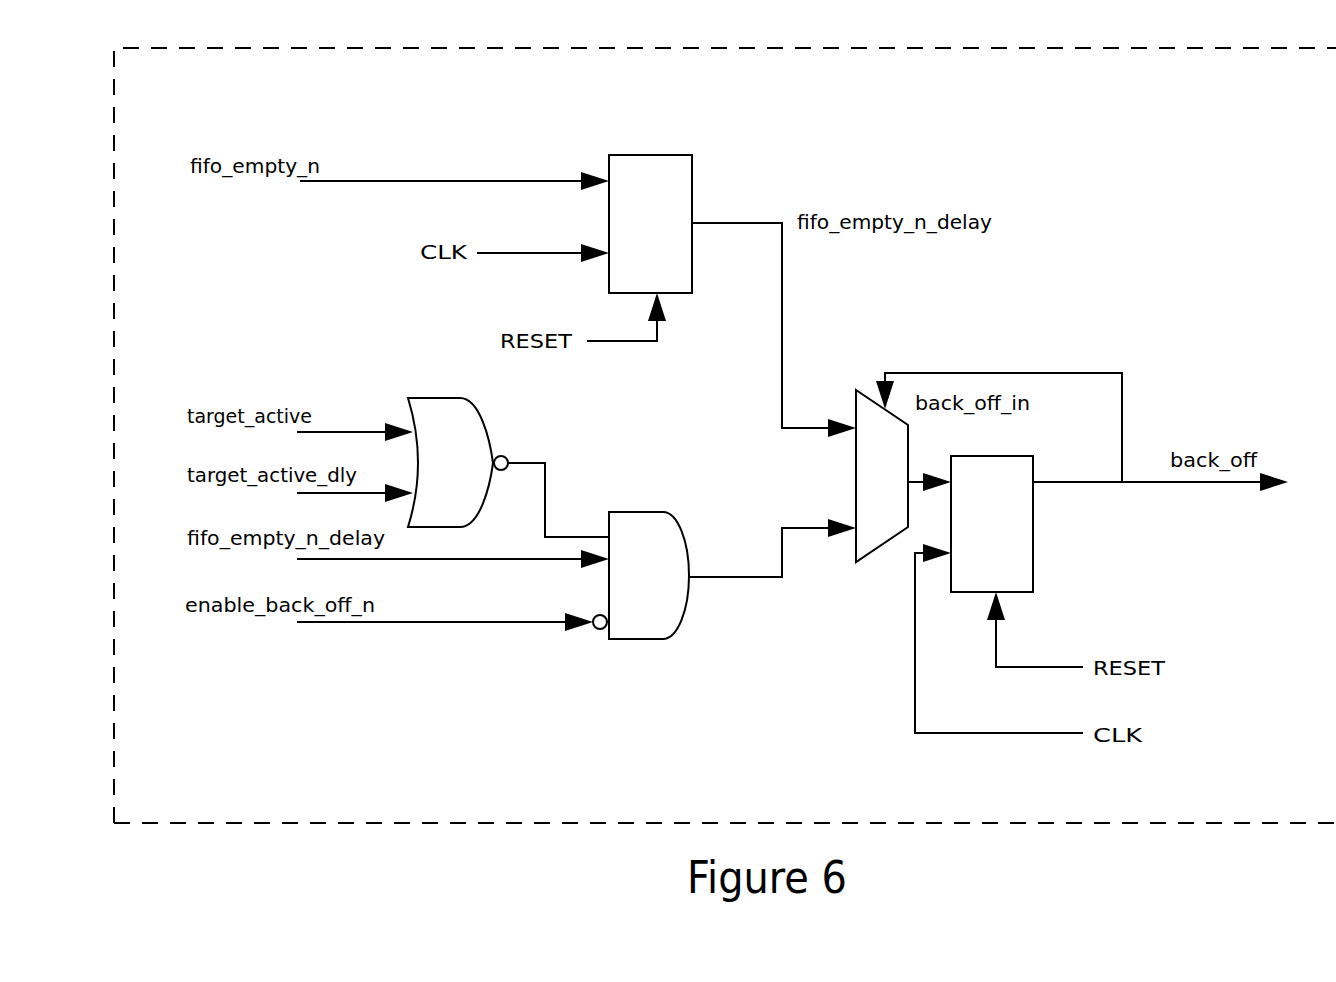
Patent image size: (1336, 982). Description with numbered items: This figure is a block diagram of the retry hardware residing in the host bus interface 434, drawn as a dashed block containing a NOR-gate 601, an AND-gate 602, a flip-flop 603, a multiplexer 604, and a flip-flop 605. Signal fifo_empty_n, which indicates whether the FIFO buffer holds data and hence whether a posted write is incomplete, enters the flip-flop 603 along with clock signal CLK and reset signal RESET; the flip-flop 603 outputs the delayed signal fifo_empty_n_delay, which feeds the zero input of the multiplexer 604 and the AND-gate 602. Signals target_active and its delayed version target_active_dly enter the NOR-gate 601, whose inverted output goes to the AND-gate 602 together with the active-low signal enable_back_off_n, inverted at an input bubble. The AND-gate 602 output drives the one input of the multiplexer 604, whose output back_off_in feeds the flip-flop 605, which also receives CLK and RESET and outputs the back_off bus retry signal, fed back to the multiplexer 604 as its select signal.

The host bus interface 434 is at (725, 435).
The NOR-gate 601 is at (458, 462).
The AND-gate 602 is at (641, 575).
The flip-flop 603 is at (650, 224).
The multiplexer 604 is at (882, 476).
The flip-flop 605 is at (992, 524).